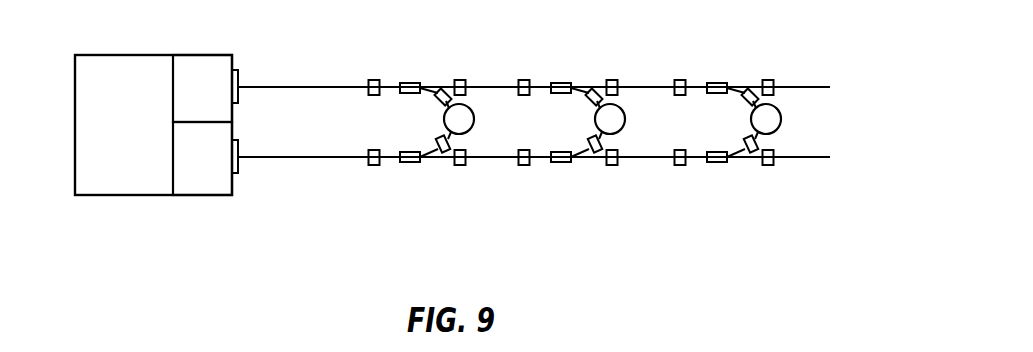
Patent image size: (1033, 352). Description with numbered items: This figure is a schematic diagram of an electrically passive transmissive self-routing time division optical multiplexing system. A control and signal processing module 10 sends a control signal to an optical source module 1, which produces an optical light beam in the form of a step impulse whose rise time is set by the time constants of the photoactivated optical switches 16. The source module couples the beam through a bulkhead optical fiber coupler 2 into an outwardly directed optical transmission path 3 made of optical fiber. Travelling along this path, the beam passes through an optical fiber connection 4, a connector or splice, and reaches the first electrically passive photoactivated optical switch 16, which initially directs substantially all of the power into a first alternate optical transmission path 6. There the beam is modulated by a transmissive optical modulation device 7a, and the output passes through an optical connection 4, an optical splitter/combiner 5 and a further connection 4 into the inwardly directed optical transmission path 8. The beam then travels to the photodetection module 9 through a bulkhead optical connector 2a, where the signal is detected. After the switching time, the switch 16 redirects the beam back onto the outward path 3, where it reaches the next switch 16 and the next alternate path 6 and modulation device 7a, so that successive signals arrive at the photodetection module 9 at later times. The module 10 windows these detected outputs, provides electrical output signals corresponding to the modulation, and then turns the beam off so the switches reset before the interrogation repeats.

The control and signal processing module 10 is at (117, 63).
The optical source module 1 is at (205, 62).
The photodetection module 9 is at (195, 185).
The bulkhead optical fiber coupler 2 is at (235, 78).
The bulkhead optical connector 2a is at (237, 173).
The outwardly directed optical transmission path 3 is at (283, 82).
The inwardly directed optical transmission path 8 is at (290, 163).
The optical fiber connection 4 is at (372, 80).
The photoactivated optical switch 16 is at (410, 83).
The optical splitter/combiner 5 is at (412, 163).
The alternate optical transmission path 6 is at (430, 97).
The transmissive optical modulation device 7a is at (463, 120).